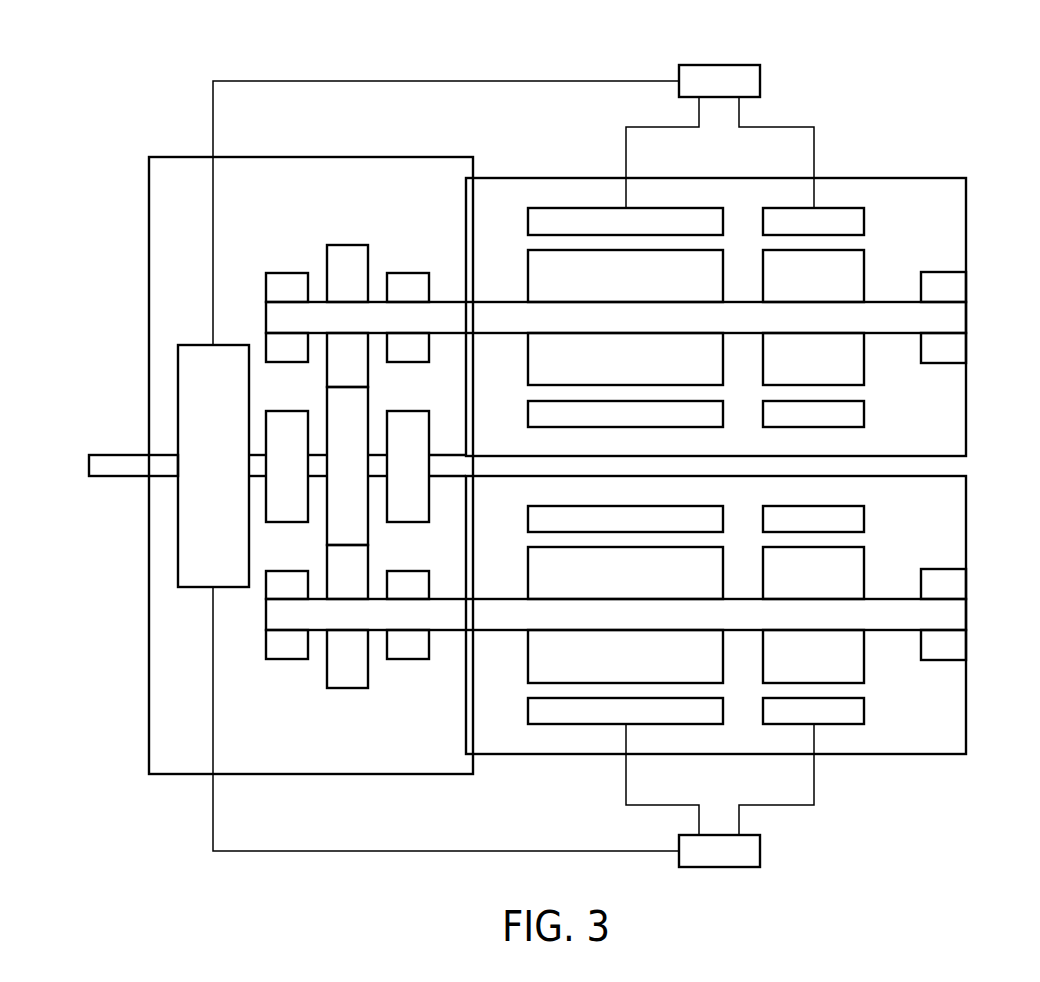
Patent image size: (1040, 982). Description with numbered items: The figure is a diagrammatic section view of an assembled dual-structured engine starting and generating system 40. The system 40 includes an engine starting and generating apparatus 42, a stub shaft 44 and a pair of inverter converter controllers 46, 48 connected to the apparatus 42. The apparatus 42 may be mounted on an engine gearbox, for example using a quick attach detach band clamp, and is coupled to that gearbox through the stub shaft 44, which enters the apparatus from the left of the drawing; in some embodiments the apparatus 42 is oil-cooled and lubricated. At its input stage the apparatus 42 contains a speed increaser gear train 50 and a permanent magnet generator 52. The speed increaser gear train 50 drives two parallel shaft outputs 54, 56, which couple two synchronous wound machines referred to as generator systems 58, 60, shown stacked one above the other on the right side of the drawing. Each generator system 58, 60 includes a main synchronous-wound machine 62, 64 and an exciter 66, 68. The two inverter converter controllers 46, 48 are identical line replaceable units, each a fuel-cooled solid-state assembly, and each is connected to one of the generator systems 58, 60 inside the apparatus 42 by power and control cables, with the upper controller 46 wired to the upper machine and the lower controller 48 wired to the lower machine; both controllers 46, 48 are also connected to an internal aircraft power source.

The engine starting and generating system 40 is at (584, 439).
The engine starting and generating apparatus 42 is at (725, 454).
The stub shaft 44 is at (112, 467).
The inverter converter controller 46 is at (760, 82).
The inverter converter controller 48 is at (760, 851).
The speed increaser gear train 50 is at (347, 405).
The permanent magnet generator 52 is at (158, 400).
The parallel shaft output 54 is at (509, 311).
The parallel shaft output 56 is at (510, 622).
The generator system 58 is at (716, 277).
The generator system 60 is at (716, 655).
The main synchronous-wound machine 62 is at (625, 170).
The main synchronous-wound machine 64 is at (625, 762).
The exciter 66 is at (778, 182).
The exciter 68 is at (778, 749).